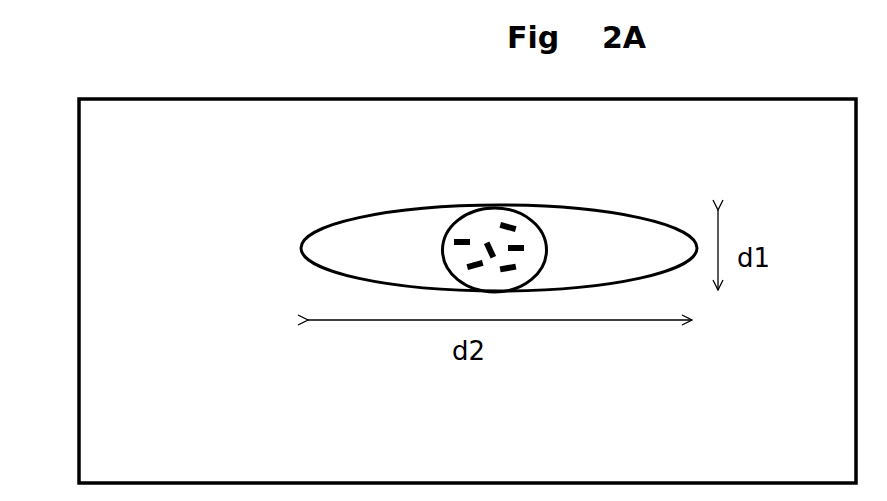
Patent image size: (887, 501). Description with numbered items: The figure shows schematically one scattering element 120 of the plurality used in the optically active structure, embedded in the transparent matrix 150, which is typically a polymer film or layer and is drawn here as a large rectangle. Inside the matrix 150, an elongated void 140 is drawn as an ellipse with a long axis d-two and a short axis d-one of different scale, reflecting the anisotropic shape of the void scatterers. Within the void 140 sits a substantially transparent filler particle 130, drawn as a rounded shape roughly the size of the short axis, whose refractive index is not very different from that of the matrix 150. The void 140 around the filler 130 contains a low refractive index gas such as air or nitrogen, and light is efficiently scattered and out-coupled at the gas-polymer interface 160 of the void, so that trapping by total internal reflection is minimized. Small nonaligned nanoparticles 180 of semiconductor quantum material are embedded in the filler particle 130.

The scattering element 120 is at (508, 198).
The filler particle 130 is at (440, 248).
The void 140 is at (590, 257).
The matrix 150 is at (160, 294).
The gas-polymer interface 160 is at (638, 282).
The nanoparticles 180 is at (521, 264).